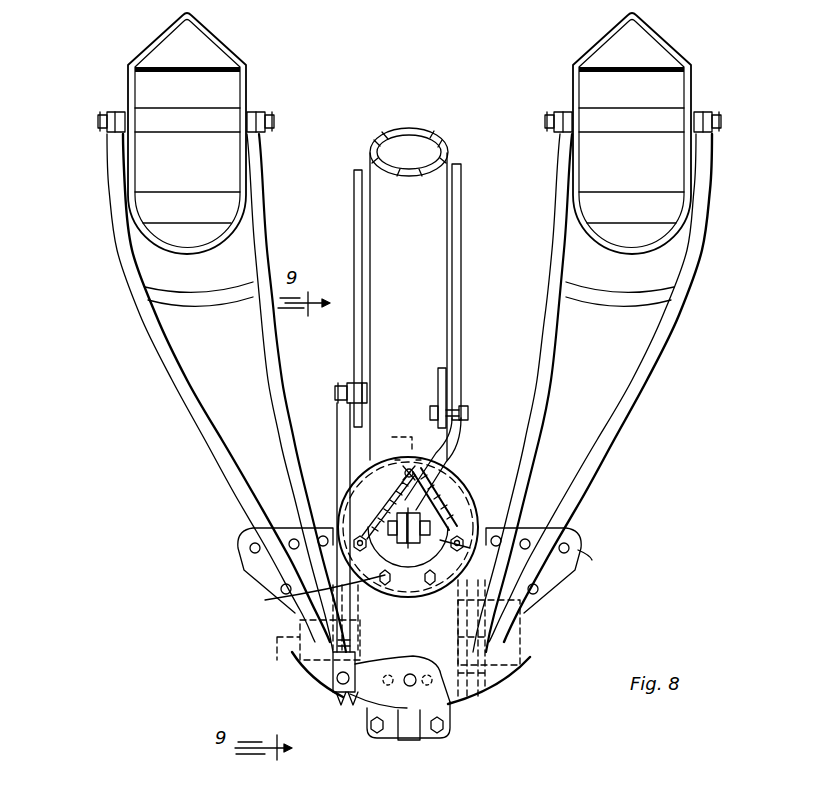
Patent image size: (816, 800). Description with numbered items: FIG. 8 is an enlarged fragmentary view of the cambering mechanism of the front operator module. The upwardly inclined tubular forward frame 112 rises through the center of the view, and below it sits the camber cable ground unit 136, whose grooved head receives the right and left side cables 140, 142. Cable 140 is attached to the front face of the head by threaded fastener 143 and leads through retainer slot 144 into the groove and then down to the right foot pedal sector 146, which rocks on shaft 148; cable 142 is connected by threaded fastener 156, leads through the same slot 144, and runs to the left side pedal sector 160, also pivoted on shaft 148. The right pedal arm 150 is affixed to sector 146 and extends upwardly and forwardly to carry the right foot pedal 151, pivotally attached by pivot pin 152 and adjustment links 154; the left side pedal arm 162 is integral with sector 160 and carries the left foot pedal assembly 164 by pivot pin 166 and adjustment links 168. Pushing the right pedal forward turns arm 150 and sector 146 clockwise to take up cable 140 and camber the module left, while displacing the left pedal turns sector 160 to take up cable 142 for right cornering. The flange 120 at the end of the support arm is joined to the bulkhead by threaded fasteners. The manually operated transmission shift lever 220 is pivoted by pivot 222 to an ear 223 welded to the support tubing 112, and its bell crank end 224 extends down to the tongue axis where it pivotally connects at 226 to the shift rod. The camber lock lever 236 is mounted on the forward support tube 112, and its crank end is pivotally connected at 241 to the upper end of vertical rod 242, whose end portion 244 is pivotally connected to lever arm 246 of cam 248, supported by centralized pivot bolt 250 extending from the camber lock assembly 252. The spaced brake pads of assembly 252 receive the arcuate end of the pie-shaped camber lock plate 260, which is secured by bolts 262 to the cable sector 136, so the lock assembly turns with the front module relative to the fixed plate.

The forward frame 112 is at (384, 178).
The flange 120 is at (245, 556).
The camber cable ground unit 136 is at (455, 517).
The right side cable 140 is at (453, 503).
The left side cable 142 is at (385, 470).
The threaded fastener 143 is at (475, 540).
The retainer slot 144 is at (417, 457).
The right foot pedal sector 146 is at (312, 618).
The shaft 148 is at (530, 640).
The right pedal arm 150 is at (197, 412).
The right foot pedal 151 is at (137, 55).
The pivot pin 152 is at (118, 130).
The adjustment links 154 is at (125, 110).
The threaded fastener 156 is at (350, 517).
The left side pedal sector 160 is at (522, 620).
The left side pedal arm 162 is at (648, 367).
The left foot pedal assembly 164 is at (693, 72).
The pivot pin 166 is at (555, 132).
The adjustment links 168 is at (566, 108).
The transmission shift lever 220 is at (457, 225).
The pivot 222 is at (470, 414).
The ear 223 is at (445, 378).
The bell crank end 224 is at (448, 452).
The pivotal connection 226 is at (395, 540).
The camber lock lever 236 is at (357, 248).
The pivotal connection 241 is at (367, 392).
The vertical rod 242 is at (335, 392).
The end portion 244 is at (347, 680).
The lever arm 246 is at (343, 693).
The cam 248 is at (480, 690).
The pivot bolt 250 is at (415, 682).
The camber lock assembly 252 is at (448, 657).
The camber lock plate 260 is at (580, 550).
The bolts 262 is at (530, 503).